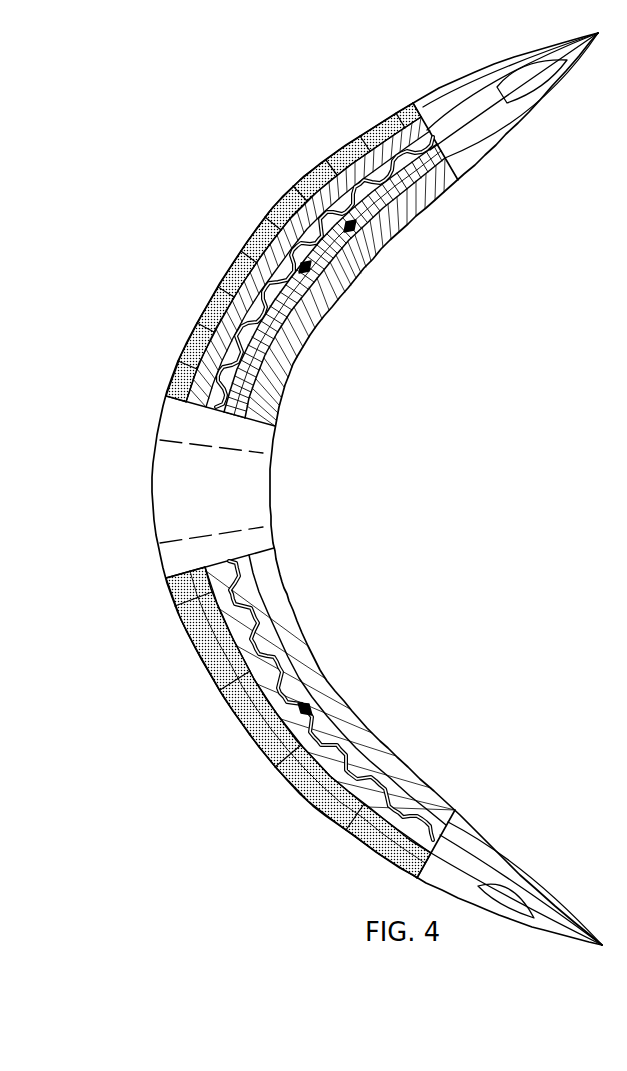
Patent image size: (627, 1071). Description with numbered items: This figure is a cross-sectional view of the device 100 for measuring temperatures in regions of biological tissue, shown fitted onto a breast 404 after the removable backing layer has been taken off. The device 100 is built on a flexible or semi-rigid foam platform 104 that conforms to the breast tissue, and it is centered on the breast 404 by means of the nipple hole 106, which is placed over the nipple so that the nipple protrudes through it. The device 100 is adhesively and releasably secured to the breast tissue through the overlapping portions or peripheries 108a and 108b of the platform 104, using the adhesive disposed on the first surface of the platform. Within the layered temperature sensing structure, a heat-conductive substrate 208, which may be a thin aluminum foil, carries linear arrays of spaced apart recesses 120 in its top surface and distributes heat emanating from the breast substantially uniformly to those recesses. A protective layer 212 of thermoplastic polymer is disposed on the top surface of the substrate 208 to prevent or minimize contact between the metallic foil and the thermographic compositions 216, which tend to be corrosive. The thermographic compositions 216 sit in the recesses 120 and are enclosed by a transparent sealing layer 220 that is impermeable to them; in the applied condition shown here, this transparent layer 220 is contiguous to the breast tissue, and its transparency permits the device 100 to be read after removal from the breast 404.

The device 100 is at (140, 790).
The platform 104 is at (187, 362).
The nipple hole 106 is at (183, 578).
The periphery 108a is at (484, 80).
The periphery 108b is at (473, 883).
The recesses 120 is at (353, 229).
The heat-conductive substrate 208 is at (278, 290).
The protective layer 212 is at (247, 316).
The thermographic compositions 216 is at (323, 290).
The transparent sealing layer 220 is at (302, 330).
The breast 404 is at (540, 488).